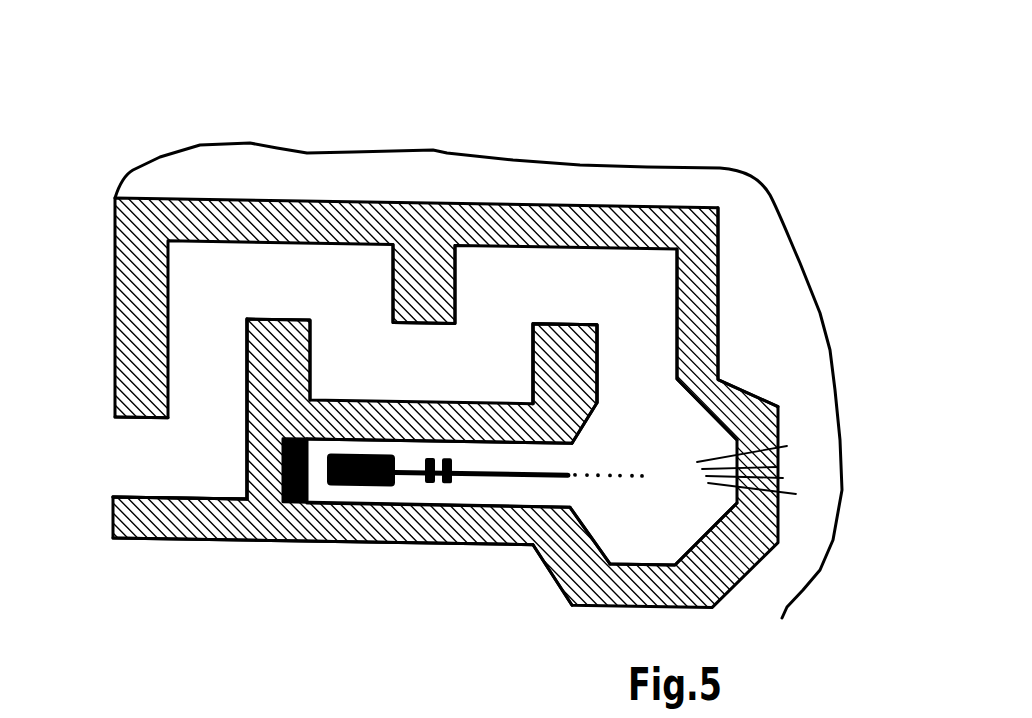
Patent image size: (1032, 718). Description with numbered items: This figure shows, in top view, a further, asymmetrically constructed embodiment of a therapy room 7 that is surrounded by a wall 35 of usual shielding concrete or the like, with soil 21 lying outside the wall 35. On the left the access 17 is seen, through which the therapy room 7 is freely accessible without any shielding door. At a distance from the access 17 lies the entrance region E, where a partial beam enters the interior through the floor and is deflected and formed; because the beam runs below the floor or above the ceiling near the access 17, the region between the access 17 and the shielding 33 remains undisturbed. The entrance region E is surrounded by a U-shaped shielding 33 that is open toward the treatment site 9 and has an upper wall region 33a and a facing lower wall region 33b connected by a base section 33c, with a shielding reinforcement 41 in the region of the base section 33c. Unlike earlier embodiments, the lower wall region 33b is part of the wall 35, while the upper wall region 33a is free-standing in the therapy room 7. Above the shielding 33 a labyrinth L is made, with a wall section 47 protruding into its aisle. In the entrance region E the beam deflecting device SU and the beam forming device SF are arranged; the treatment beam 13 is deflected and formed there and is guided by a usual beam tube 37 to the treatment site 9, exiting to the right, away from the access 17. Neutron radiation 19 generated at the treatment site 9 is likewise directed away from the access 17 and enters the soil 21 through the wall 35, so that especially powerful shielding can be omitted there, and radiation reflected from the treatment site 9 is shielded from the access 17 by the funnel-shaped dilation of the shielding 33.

The therapy room 7 is at (723, 260).
The treatment site 9 is at (653, 470).
The treatment beam 13 is at (603, 480).
The access 17 is at (158, 457).
The neutron radiation 19 is at (777, 465).
The soil 21 is at (797, 353).
The shielding 33 is at (397, 422).
The upper wall region 33a is at (562, 377).
The lower wall region 33b is at (593, 567).
The base section 33c is at (257, 480).
The wall 35 is at (707, 313).
The beam tube 37 is at (476, 480).
The shielding reinforcement 41 is at (309, 462).
The wall section 47 is at (545, 330).
The entrance region E is at (318, 488).
The beam deflecting device SU is at (360, 485).
The beam forming device SF is at (443, 481).
The labyrinth L is at (400, 375).